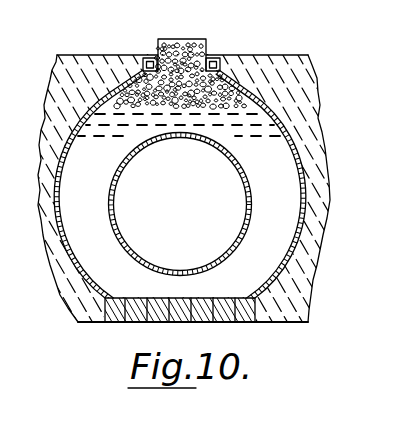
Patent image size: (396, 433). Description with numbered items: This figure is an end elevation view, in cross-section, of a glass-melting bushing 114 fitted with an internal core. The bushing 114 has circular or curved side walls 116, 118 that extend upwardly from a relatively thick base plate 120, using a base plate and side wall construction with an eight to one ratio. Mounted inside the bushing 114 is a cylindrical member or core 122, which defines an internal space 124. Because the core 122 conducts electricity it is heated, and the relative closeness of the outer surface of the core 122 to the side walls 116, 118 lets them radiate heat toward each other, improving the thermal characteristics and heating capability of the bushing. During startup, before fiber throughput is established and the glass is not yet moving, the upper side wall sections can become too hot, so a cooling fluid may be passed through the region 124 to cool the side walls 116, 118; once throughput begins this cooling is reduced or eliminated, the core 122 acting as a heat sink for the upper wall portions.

The bushing 114 is at (265, 53).
The side wall 116 is at (71, 168).
The side wall 118 is at (297, 171).
The base plate 120 is at (126, 323).
The core 122 is at (241, 251).
The internal space 124 is at (197, 212).